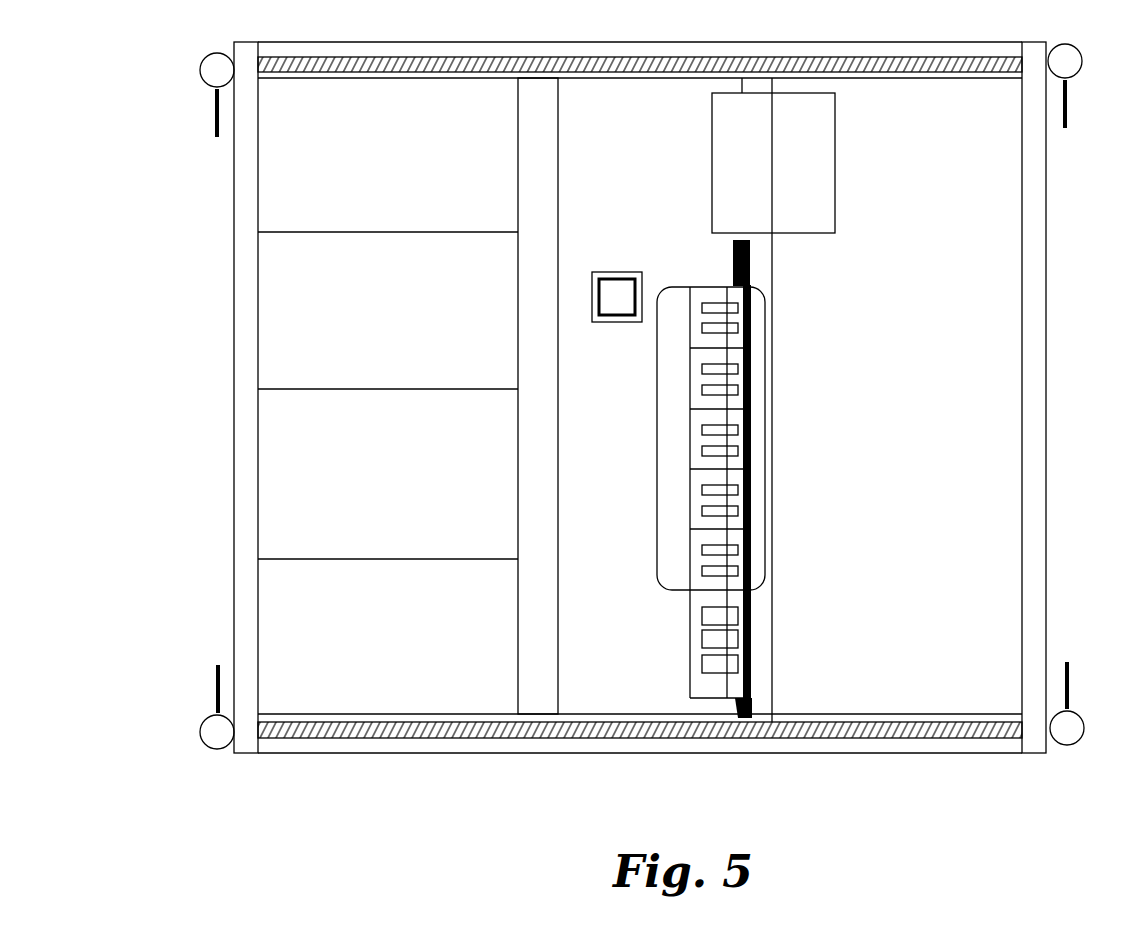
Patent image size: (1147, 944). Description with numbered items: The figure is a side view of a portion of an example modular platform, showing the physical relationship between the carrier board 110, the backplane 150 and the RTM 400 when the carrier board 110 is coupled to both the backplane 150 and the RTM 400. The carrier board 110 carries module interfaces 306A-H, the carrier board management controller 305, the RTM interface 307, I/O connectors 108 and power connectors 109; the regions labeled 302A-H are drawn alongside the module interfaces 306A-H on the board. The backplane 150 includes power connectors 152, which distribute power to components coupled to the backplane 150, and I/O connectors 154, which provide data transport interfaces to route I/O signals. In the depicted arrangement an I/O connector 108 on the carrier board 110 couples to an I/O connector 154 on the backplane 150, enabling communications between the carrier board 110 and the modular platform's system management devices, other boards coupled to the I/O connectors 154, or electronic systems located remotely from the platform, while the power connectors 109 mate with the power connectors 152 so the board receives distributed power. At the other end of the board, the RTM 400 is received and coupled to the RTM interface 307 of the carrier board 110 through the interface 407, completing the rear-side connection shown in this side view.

The carrier board 110 is at (280, 752).
The RTM 400 is at (926, 368).
The storage shelves 302A-H is at (258, 172).
The module interfaces 306A-H is at (533, 683).
The carrier board management controller 305 is at (631, 272).
The RTM interface 307 is at (724, 116).
The interface 407 is at (811, 163).
The I/O connectors 108 is at (657, 290).
The I/O connectors 154 is at (767, 290).
The power connectors 109 is at (689, 665).
The power connectors 152 is at (733, 658).
The backplane 150 is at (731, 732).